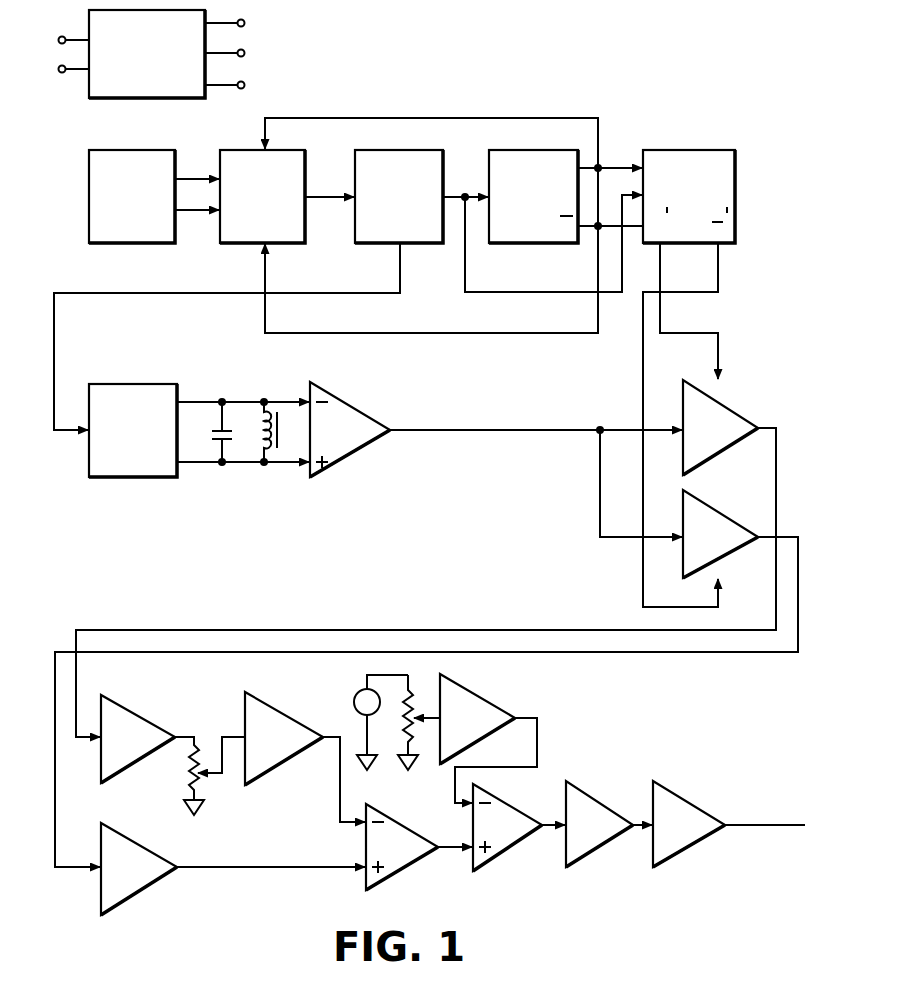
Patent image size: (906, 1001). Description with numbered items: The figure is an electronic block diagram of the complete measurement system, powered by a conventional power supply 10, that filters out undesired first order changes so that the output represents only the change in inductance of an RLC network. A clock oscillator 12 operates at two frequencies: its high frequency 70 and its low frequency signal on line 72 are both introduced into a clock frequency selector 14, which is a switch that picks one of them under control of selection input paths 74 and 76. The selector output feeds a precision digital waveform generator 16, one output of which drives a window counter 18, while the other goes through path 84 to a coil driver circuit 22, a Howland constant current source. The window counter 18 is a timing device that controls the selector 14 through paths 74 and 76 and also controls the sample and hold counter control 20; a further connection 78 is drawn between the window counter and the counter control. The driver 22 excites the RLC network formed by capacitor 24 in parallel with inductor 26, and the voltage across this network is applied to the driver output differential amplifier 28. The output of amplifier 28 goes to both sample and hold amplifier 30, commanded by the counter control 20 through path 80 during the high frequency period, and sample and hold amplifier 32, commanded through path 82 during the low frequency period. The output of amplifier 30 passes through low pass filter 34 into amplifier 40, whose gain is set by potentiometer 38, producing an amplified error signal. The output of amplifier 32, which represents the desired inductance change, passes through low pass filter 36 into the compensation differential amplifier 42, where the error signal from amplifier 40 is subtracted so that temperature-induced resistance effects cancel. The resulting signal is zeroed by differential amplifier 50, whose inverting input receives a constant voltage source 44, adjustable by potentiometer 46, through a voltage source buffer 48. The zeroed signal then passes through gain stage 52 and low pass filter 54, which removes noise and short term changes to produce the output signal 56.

The power supply 10 is at (126, 103).
The clock oscillator 12 is at (97, 178).
The clock frequency selector 14 is at (238, 155).
The precision digital waveform generator 16 is at (437, 171).
The window counter 18 is at (571, 190).
The counter control 20 is at (730, 187).
The coil driver circuit 22 is at (155, 393).
The capacitor 24 is at (217, 431).
The inductor 26 is at (262, 436).
The driver output differential amplifier 28 is at (343, 410).
The sample and hold amplifier 30 is at (735, 418).
The sample and hold amplifier 32 is at (713, 517).
The low pass filter 34 is at (128, 720).
The low pass filter 36 is at (115, 838).
The potentiometer 38 is at (198, 762).
The amplifier 40 is at (270, 722).
The compensation differential amplifier 42 is at (400, 838).
The constant voltage source 44 is at (357, 696).
The potentiometer 46 is at (404, 719).
The voltage source buffer 48 is at (468, 700).
The zeroing stage differential amplifier 50 is at (503, 808).
The gain stage 52 is at (590, 808).
The low pass filter 54 is at (672, 802).
The output signal 56 is at (795, 822).
The high frequency 70 is at (192, 181).
The low frequency line 72 is at (205, 212).
The selection input path 74 is at (472, 118).
The selection input path 76 is at (420, 333).
The connection line 78 is at (510, 292).
The path 80 is at (661, 255).
The path 82 is at (722, 256).
The path 84 is at (150, 294).